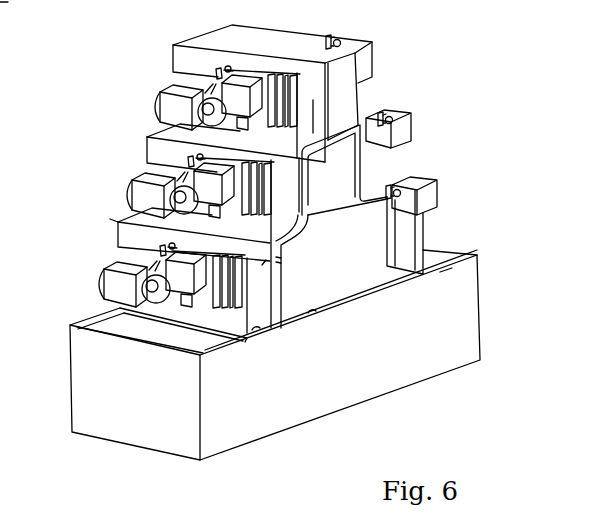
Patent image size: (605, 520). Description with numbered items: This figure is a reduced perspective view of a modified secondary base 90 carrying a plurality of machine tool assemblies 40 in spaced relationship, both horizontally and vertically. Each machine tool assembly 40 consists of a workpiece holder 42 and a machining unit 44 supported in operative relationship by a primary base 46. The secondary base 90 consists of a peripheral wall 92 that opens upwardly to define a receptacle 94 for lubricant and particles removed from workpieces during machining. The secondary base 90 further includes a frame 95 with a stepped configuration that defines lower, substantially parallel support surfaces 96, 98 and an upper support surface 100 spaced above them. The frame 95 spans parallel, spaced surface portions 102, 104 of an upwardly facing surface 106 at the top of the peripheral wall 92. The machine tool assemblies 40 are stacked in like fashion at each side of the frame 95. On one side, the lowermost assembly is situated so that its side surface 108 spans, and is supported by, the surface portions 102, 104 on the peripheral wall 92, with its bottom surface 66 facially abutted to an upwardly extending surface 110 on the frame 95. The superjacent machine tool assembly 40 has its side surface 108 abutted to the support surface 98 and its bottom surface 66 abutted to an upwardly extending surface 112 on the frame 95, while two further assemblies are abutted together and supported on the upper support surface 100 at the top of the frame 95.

The machine tool assembly 40 is at (213, 27).
The workpiece holder 42 is at (155, 118).
The machining unit 44 is at (260, 86).
The primary base 46 is at (310, 95).
The bottom surface 66 is at (305, 174).
The secondary base 90 is at (482, 285).
The peripheral wall 92 is at (464, 330).
The receptacle 94 is at (183, 332).
The frame 95 is at (366, 159).
The lower support surface 96 is at (377, 194).
The lower support surface 98 is at (110, 219).
The upper support surface 100 is at (313, 133).
The surface portion 102 is at (100, 310).
The surface portion 104 is at (281, 263).
The upwardly facing surface 106 is at (452, 268).
The side surface 108 is at (281, 258).
The upwardly extending surface 110 is at (262, 265).
The upwardly extending surface 112 is at (297, 158).